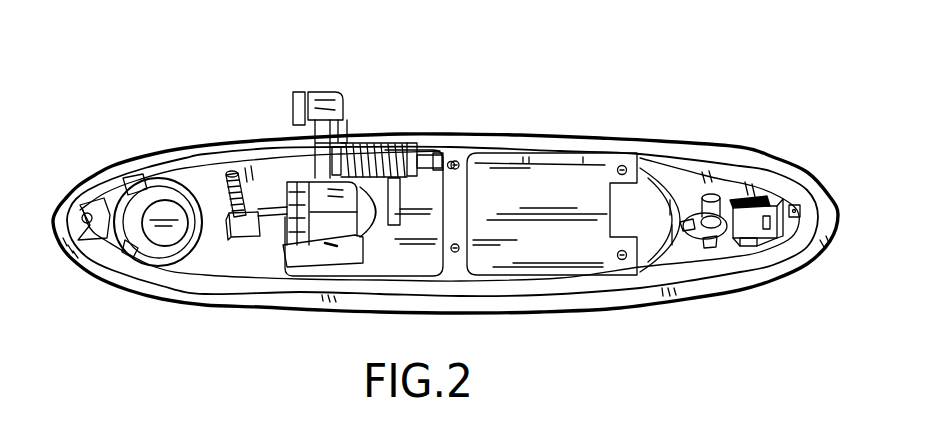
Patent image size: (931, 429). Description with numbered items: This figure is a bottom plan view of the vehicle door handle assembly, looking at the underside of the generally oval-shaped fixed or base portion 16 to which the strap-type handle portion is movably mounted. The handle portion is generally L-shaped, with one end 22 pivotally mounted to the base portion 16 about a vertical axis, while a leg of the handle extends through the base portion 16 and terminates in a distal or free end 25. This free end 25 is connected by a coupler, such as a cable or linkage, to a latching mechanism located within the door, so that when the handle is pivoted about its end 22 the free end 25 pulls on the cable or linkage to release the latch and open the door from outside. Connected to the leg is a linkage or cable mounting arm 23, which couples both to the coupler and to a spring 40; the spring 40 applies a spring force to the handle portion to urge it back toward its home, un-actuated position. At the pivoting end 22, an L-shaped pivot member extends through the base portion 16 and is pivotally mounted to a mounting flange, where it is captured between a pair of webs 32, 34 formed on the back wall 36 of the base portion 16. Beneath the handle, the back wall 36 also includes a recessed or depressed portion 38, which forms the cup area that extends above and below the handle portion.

The fixed portion 16 is at (537, 128).
The end of handle portion 22 is at (750, 203).
The linkage or cable mounting arm 23 is at (345, 117).
The distal end 25 is at (335, 203).
The web 32 is at (770, 200).
The web 34 is at (743, 240).
The back wall 36 is at (563, 243).
The recessed or depressed portion 38 is at (502, 252).
The spring 40 is at (383, 137).